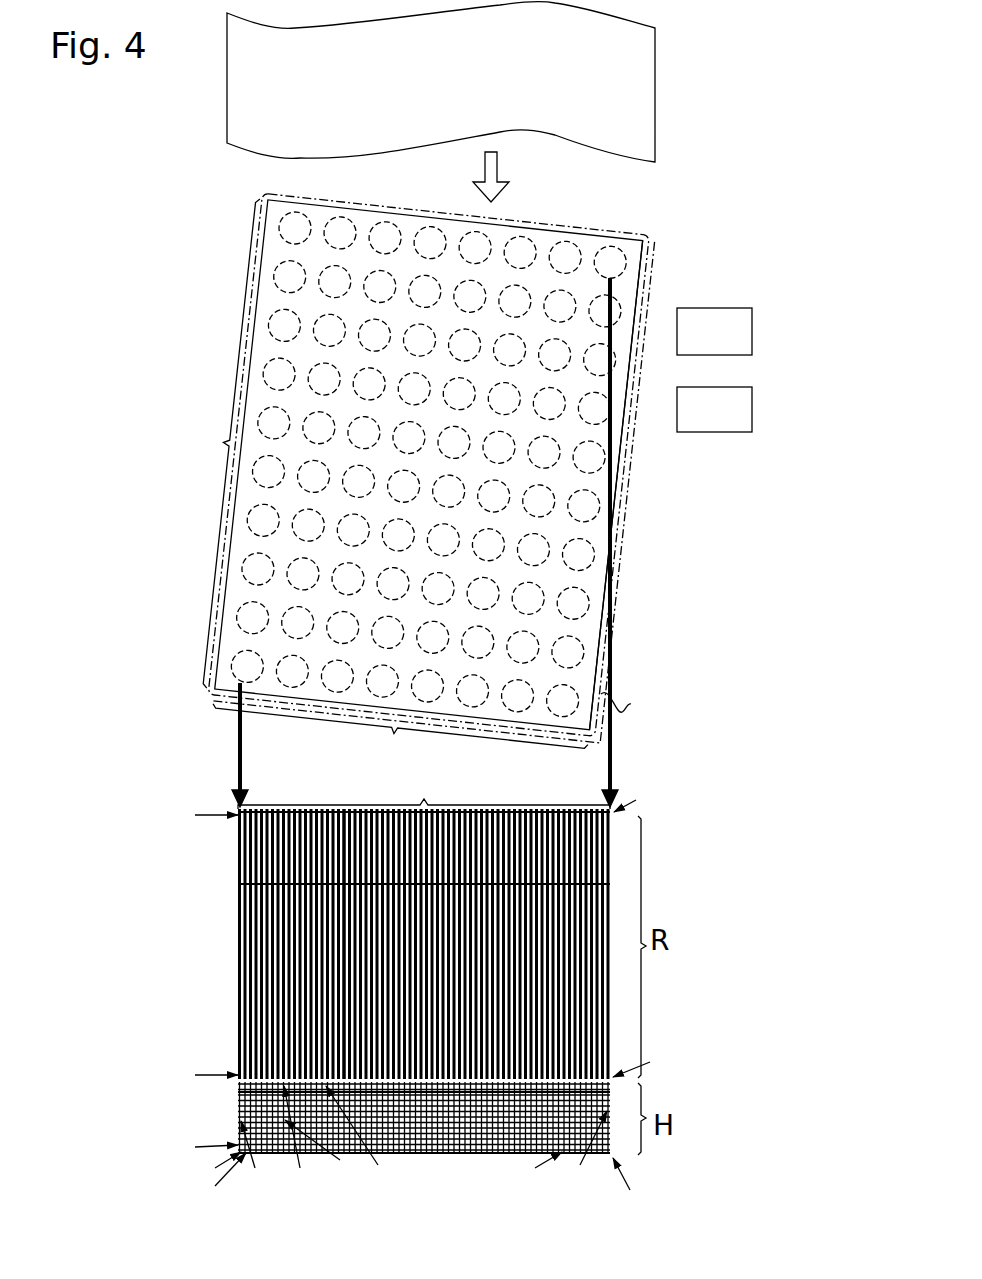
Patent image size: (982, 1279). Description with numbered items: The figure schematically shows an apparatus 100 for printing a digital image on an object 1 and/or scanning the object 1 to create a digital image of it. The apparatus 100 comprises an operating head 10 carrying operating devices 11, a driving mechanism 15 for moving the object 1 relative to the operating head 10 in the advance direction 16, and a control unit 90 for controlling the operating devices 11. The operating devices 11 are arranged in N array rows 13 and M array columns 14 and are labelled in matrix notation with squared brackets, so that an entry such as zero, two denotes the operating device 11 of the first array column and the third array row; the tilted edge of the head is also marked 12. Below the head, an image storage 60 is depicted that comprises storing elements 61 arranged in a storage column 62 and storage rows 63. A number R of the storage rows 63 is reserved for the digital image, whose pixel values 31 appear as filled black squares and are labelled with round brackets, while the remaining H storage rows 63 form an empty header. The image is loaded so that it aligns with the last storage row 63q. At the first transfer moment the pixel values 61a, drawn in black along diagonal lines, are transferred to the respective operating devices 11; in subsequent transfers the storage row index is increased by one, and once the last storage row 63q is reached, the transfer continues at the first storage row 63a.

The object 1 is at (461, 91).
The advance direction 16 is at (486, 172).
The operating head 10 is at (598, 236).
The apparatus 100 is at (796, 184).
The array columns 14 is at (465, 730).
The plate edge 12 is at (620, 520).
The array rows 13 is at (262, 225).
The operating devices 11 is at (575, 605).
The driving mechanism 15 is at (635, 330).
The control unit 90 is at (627, 408).
The image storage 60 is at (405, 996).
The pixel values 31 is at (240, 937).
The storing elements 61 is at (250, 1103).
The pixel values to be transferred 61a is at (455, 1110).
The storage column 62 is at (283, 807).
The storage rows 63 is at (613, 882).
The last storage row 63q is at (613, 818).
The first storage row 63a is at (613, 1153).